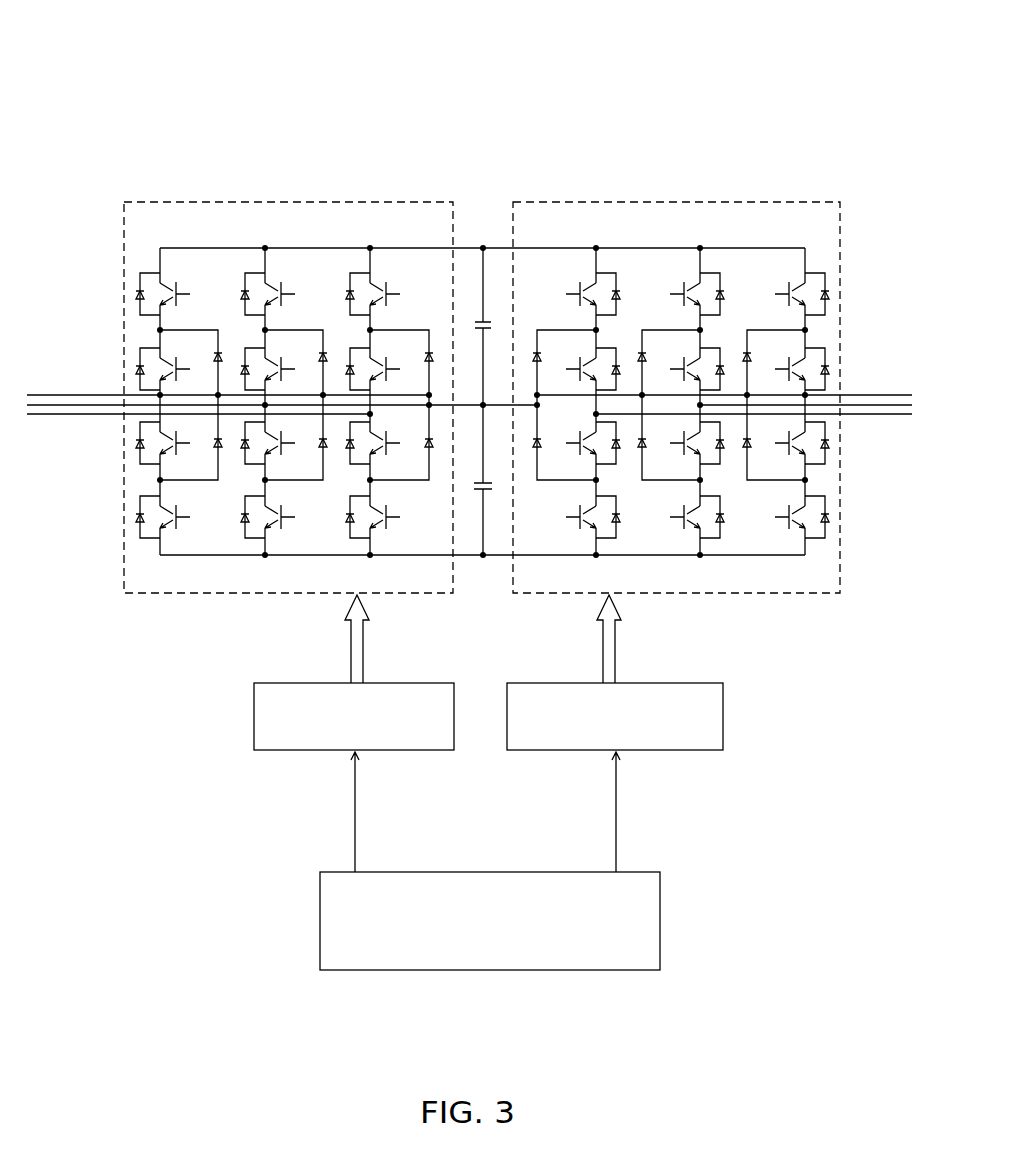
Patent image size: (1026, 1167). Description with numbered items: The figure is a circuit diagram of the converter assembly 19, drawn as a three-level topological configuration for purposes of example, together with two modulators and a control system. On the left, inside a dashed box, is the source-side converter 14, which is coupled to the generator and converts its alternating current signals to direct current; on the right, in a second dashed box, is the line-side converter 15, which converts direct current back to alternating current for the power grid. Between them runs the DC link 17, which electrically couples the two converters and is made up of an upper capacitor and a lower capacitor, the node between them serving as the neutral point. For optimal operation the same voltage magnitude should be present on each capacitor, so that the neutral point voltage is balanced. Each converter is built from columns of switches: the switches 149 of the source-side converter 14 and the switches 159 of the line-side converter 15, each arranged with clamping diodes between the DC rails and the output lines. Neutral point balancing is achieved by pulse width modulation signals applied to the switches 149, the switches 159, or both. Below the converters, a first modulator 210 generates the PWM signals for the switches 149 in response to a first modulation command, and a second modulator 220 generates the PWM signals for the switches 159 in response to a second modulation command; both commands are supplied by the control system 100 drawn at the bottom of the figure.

The converter assembly 19 is at (168, 78).
The source-side converter 14 is at (243, 200).
The switches 149 is at (290, 294).
The DC link 17 is at (490, 207).
The line-side converter 15 is at (676, 200).
The switches 159 is at (777, 265).
The first modulator 210 is at (310, 690).
The second modulator 220 is at (680, 697).
The control system 100 is at (645, 922).